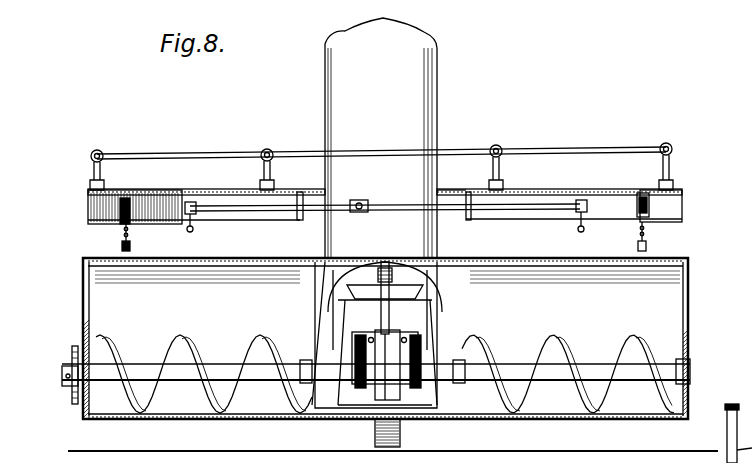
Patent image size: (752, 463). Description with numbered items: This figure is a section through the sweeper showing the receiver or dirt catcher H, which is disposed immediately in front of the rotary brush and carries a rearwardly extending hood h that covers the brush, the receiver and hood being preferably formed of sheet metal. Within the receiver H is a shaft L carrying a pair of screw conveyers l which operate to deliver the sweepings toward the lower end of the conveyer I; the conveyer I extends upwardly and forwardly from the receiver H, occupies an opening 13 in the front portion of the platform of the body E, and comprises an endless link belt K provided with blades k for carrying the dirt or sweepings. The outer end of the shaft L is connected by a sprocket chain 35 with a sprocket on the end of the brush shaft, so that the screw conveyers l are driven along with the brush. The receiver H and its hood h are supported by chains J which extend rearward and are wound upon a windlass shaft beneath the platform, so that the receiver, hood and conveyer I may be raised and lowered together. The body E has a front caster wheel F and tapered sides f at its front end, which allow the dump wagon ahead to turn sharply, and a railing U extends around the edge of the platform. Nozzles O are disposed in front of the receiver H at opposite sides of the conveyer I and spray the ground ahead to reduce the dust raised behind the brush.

The conveyer I is at (437, 95).
The railing U is at (621, 147).
The tapered sides f is at (173, 189).
The opening 13 is at (455, 185).
The body E is at (683, 204).
The chains J is at (121, 236).
The nozzles O is at (192, 232).
The hood h is at (76, 302).
The endless link belt K is at (403, 282).
The receiver H is at (670, 283).
The screw conveyers l is at (636, 331).
The shaft L is at (453, 375).
The sprocket chain 35 is at (70, 344).
The blades k is at (368, 384).
The front caster wheel F is at (407, 444).